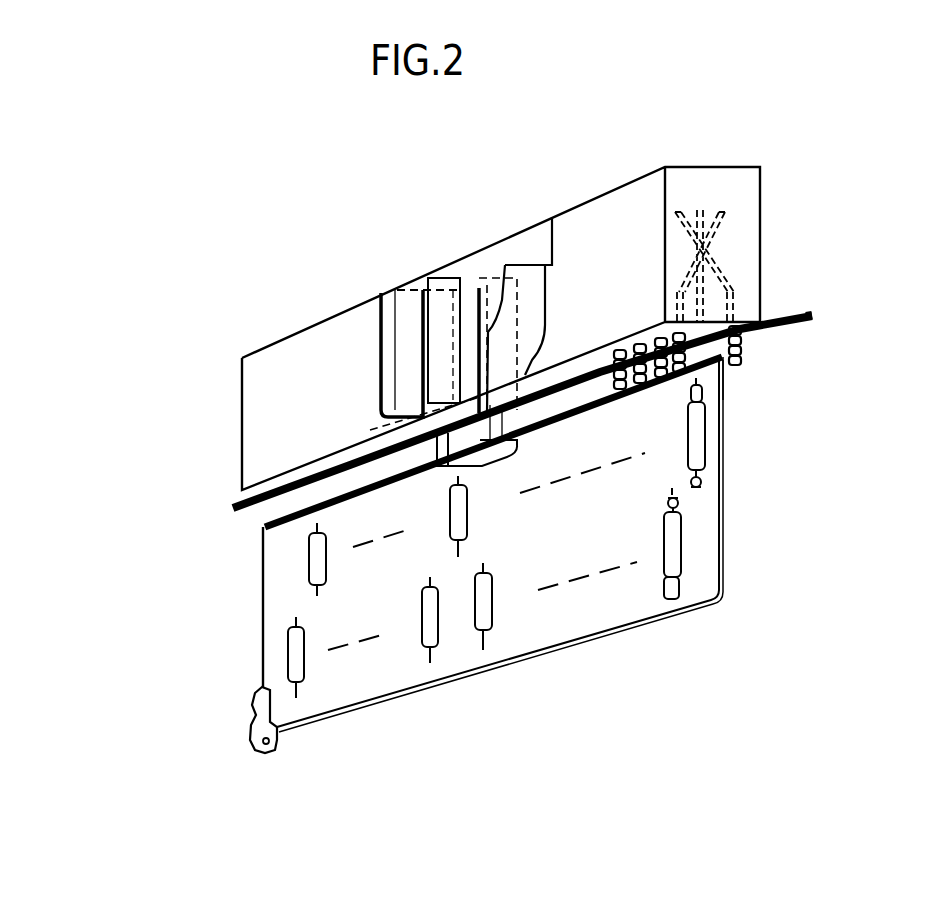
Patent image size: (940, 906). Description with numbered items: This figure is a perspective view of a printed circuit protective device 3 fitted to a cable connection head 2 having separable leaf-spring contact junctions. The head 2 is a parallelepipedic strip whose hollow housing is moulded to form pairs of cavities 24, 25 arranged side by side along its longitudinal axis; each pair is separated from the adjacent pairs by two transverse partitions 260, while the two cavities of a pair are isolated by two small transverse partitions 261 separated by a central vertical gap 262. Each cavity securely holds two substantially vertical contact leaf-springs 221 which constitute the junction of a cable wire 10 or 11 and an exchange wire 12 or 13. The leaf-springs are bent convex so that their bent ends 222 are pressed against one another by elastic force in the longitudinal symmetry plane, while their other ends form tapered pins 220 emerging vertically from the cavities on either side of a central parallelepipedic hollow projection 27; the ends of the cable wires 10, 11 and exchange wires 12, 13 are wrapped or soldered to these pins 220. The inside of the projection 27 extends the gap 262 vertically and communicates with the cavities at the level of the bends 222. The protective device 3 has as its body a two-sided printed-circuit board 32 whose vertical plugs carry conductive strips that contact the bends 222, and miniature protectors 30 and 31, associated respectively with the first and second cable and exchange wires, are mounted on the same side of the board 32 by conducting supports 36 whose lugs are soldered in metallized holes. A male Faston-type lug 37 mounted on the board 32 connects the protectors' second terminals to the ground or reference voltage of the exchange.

The cable head 2 is at (263, 349).
The protective device 3 is at (259, 627).
The cable wire 10 is at (447, 453).
The cable wire 11 is at (233, 495).
The exchange wire 12 is at (867, 314).
The exchange wire 13 is at (828, 346).
The cavity 24 is at (406, 321).
The cavity 25 is at (444, 359).
The hollow projection 27 is at (484, 458).
The miniature protector 30 is at (738, 429).
The miniature protector 31 is at (300, 664).
The printed-circuit board 32 is at (725, 398).
The conducting support 36 is at (680, 504).
The lug 37 is at (262, 725).
The tapered pin 220 is at (742, 351).
The contact leaf-spring 221 is at (727, 212).
The bent end 222 is at (701, 212).
The transverse partition 260 is at (517, 287).
The small transverse partition 261 is at (486, 282).
The central vertical gap 262 is at (468, 283).